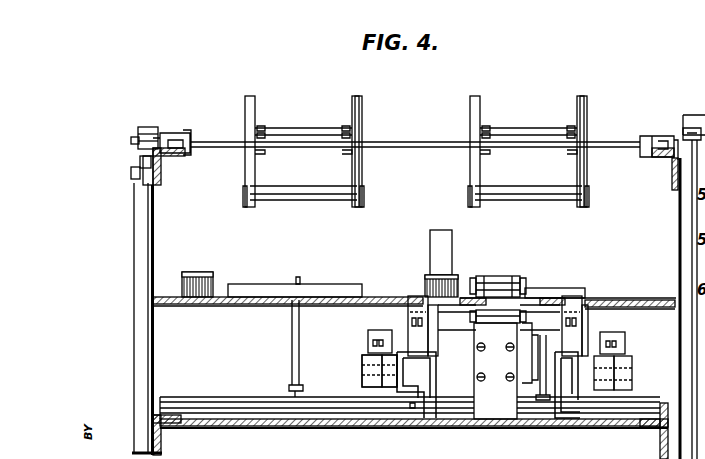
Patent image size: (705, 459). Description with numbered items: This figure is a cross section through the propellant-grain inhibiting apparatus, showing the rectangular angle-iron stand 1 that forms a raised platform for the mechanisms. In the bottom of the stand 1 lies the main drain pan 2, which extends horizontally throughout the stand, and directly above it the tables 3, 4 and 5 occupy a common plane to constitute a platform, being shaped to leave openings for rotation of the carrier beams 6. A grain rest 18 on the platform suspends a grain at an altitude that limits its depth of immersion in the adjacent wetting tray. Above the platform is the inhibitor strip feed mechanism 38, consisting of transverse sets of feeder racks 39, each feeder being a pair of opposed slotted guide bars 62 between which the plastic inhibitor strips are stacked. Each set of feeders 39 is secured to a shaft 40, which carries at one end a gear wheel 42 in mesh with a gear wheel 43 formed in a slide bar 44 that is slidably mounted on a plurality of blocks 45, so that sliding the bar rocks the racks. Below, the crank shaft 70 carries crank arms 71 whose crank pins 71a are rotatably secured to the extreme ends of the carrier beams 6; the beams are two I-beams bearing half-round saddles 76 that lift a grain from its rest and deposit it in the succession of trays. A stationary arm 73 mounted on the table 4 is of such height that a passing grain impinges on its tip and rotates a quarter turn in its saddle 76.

The stand 1 is at (138, 318).
The main drain pan 2 is at (258, 426).
The table 3 is at (222, 297).
The table 4 is at (548, 298).
The table 5 is at (644, 302).
The carrier beam 6 is at (365, 356).
The grain rest 18 is at (190, 272).
The inhibitor strip feed mechanism 38 is at (258, 104).
The feeder rack 39 is at (362, 110).
The shaft 40 is at (133, 139).
The gear wheel 42 is at (146, 128).
The gear wheel 43 is at (140, 158).
The slide bar 44 is at (147, 184).
The block 45 is at (140, 178).
The slotted guide bar 62 is at (362, 130).
The shaft 70 is at (499, 347).
The crank arm 71 is at (407, 320).
The crank pin 71a is at (368, 374).
The stationary arm 73 is at (430, 255).
The half-round saddle 76 is at (368, 339).